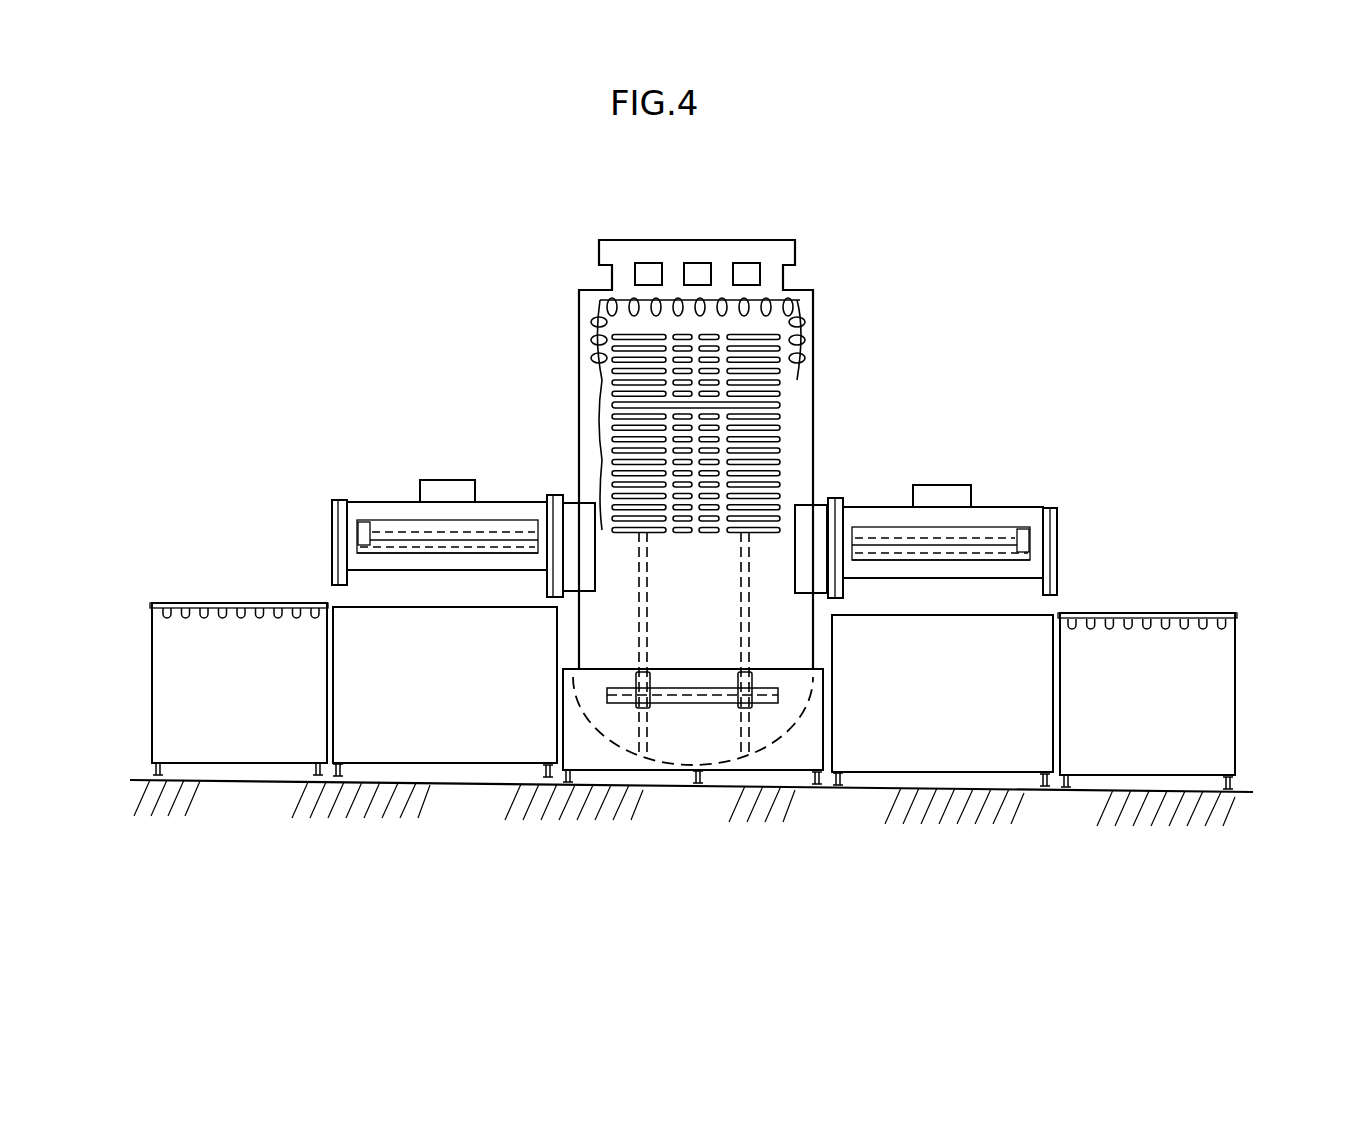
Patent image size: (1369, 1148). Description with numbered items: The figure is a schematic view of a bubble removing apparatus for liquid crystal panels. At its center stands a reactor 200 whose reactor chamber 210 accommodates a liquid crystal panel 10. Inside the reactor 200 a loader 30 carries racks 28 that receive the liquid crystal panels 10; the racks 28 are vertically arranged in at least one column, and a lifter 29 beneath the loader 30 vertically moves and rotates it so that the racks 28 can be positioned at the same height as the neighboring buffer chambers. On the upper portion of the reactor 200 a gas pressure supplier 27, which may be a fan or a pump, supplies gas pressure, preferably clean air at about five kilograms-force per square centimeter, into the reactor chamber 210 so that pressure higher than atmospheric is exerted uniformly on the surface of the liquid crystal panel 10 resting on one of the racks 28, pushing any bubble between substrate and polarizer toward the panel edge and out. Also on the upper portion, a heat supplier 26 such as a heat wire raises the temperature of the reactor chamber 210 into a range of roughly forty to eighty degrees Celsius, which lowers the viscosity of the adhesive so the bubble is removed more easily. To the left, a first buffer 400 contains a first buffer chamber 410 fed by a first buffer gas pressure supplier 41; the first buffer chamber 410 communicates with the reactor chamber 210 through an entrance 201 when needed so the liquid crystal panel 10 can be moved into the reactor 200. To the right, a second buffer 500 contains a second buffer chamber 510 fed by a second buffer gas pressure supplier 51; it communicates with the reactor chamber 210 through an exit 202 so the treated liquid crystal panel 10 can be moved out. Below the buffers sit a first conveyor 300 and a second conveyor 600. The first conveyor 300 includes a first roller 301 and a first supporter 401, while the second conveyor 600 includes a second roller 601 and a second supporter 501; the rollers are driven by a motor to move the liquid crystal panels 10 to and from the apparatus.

The reactor 200 is at (694, 542).
The gas pressure supplier 27 is at (768, 252).
The heat supplier 26 is at (800, 305).
The reactor chamber 210 is at (810, 357).
The racks 28 is at (775, 392).
The liquid crystal panel 10 is at (783, 405).
The loader 30 is at (600, 430).
The lifter 29 is at (745, 722).
The entrance 201 is at (590, 590).
The exit 202 is at (825, 592).
The first conveyor 300 is at (180, 644).
The first roller 301 is at (131, 630).
The first buffer 400 is at (376, 491).
The first buffer chamber 410 is at (365, 547).
The first buffer gas pressure supplier 41 is at (447, 487).
The first supporter 401 is at (445, 685).
The second buffer 500 is at (1000, 505).
The second buffer chamber 510 is at (1040, 548).
The second buffer gas pressure supplier 51 is at (940, 485).
The second supporter 501 is at (942, 693).
The second conveyor 600 is at (1208, 657).
The second roller 601 is at (1200, 615).